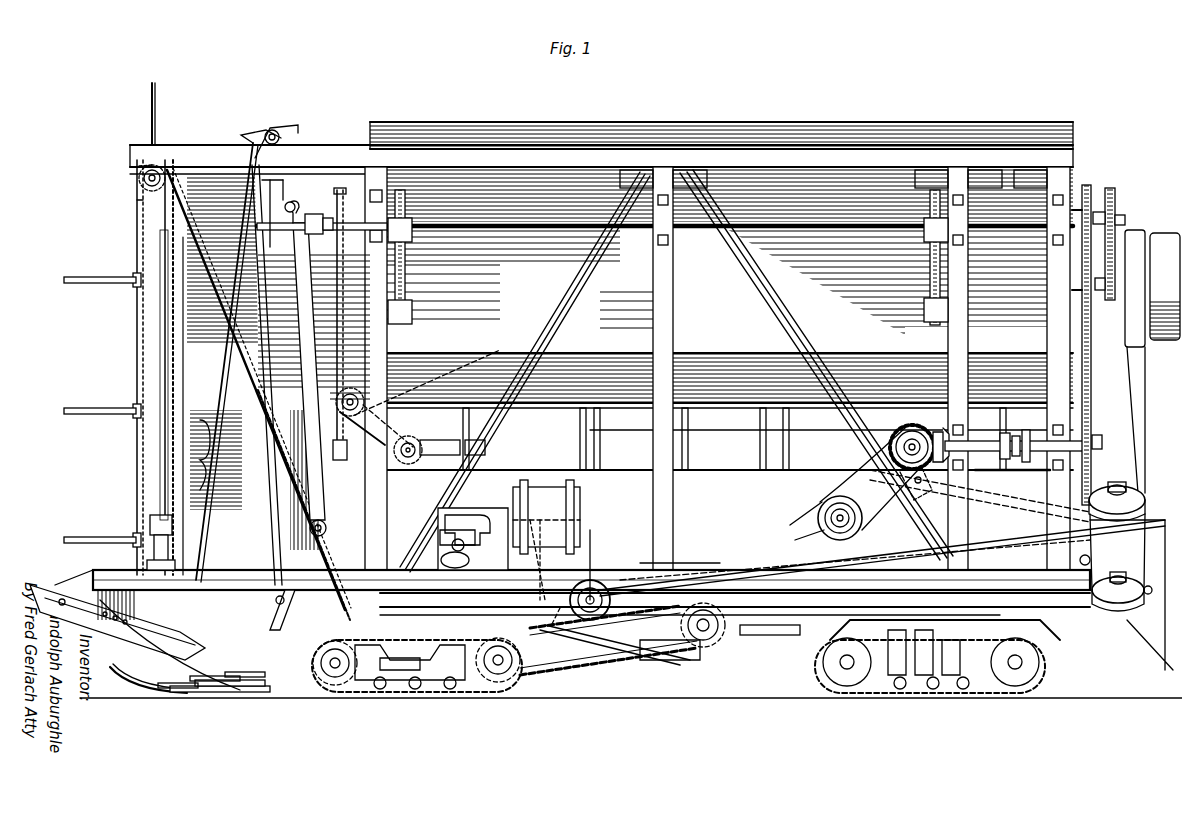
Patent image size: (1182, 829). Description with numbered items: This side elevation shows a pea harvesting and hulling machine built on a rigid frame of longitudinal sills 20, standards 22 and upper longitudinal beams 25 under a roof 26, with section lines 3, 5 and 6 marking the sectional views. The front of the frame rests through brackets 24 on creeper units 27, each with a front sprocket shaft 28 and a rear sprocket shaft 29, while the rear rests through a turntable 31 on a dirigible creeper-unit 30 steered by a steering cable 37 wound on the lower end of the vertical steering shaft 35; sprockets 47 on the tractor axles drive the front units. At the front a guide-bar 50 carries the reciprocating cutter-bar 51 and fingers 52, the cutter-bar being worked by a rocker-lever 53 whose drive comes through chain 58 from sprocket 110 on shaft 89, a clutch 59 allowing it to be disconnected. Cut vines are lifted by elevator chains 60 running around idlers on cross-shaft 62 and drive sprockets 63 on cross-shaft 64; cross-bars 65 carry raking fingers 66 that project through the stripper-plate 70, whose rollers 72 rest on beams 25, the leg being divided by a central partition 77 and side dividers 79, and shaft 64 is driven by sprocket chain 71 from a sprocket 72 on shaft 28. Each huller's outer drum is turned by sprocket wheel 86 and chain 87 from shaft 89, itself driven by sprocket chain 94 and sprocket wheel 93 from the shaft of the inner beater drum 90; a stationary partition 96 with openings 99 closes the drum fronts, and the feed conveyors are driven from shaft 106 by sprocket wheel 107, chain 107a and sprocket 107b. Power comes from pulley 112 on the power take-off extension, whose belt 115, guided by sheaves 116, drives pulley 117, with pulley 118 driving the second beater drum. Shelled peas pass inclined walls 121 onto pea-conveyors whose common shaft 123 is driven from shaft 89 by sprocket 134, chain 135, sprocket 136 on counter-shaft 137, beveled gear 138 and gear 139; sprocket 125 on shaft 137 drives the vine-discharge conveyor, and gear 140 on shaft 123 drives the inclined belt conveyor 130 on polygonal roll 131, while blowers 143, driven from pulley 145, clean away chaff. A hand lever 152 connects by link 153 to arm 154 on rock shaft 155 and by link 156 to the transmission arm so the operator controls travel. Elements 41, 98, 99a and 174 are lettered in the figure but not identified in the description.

The section line 3— 3 is at (125, 458).
The section line 5— 5 is at (288, 178).
The section line 6— 6 is at (910, 182).
The longitudinal beams or sills 20 is at (591, 581).
The standards 22 is at (393, 340).
The brackets 24 is at (735, 612).
The upper longitudinal beams or sills 25 is at (601, 240).
The roof 26 is at (721, 133).
The creeper or caterpillar units 27 is at (430, 692).
The transverse shaft for front sprockets 28 is at (350, 692).
The transverse shaft for rear sprockets 29 is at (498, 683).
The dirigible creeper-unit 30 is at (286, 212).
The turntable 31 is at (1050, 630).
The vertical shaft 35 is at (312, 528).
The steering cable 37 is at (300, 610).
The motor 41 is at (470, 512).
The sprockets 47 is at (710, 648).
The guide-bar 50 is at (200, 692).
The cutter-bar 51 is at (240, 690).
The forwardly projecting fingers 52 is at (165, 692).
The rocker-lever 53 is at (260, 685).
The chain 58 is at (370, 167).
The clutch 59 is at (310, 213).
The endless chains 60 is at (137, 511).
The cross-shaft 62 is at (125, 620).
The drive sprockets 63 is at (135, 192).
The cross-shaft 64 is at (140, 178).
The cross-bars 65 is at (124, 401).
The raking or carrying fingers 66 is at (78, 283).
The stripper-plate 70 is at (190, 511).
The sprocket chain 71 is at (137, 348).
The sprocket 72 is at (280, 137).
The central partition 77 is at (204, 170).
The dividers 79 is at (185, 174).
The sprocket wheel 86 is at (407, 200).
The chain 87 is at (414, 297).
The longitudinal shaft 89 is at (512, 228).
The inner hexagonal drum 90 is at (612, 568).
The sprocket wheel 93 is at (1115, 196).
The sprocket chain 94 is at (1115, 230).
The stationary partition 96 is at (560, 560).
The bracket 98 is at (650, 660).
The openings 99 is at (550, 685).
The link bar 99a is at (770, 642).
The common shaft 106 is at (358, 384).
The sprocket wheel 107 is at (370, 400).
The chain 107a is at (427, 382).
The sprocket 107b is at (414, 440).
The sprocket 110 is at (340, 190).
The pulley 112 is at (615, 645).
The belt 115 is at (1138, 390).
The sheaves 116 is at (1140, 520).
The pulley 117 is at (1142, 232).
The pulley 118 is at (1170, 340).
The inclined fixed walls 121 is at (1090, 480).
The common shaft 123 is at (914, 438).
The sprocket 125 is at (1018, 432).
The inclined endless conveyor belt 130 is at (980, 492).
The polygonal roll 131 is at (905, 500).
The sprocket 134 is at (1088, 200).
The chain 135 is at (1082, 350).
The sprocket 136 is at (1102, 442).
The counter-shaft 137 is at (980, 440).
The beveled gear 138 is at (945, 430).
The gear 139 is at (897, 432).
The gear 140 is at (980, 505).
The blowers 143 is at (822, 500).
The pulley 145 is at (605, 590).
The hand lever 152 is at (312, 487).
The link 153 is at (395, 520).
The arm 154 is at (575, 535).
The rock shaft 155 is at (525, 622).
The link 156 is at (620, 645).
The diagonal bar 174 is at (716, 560).